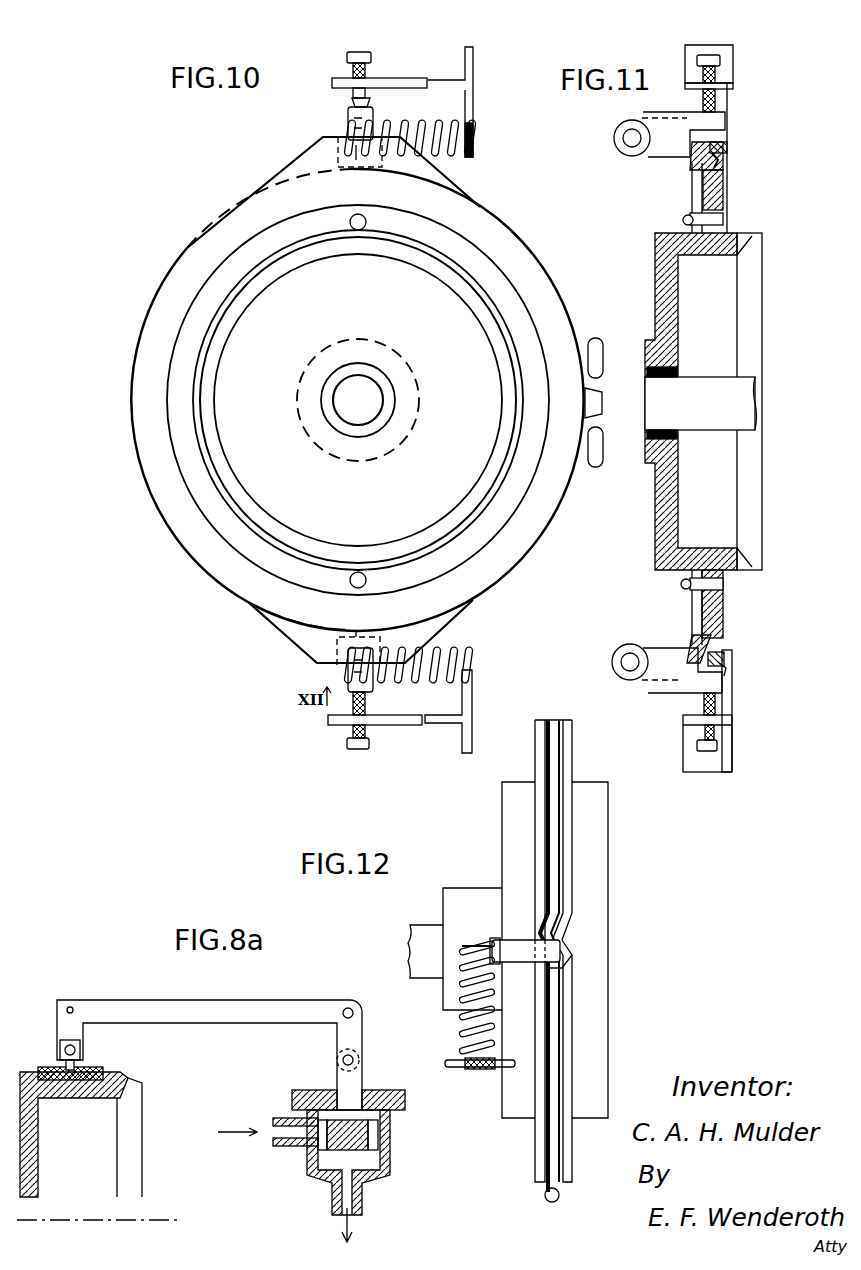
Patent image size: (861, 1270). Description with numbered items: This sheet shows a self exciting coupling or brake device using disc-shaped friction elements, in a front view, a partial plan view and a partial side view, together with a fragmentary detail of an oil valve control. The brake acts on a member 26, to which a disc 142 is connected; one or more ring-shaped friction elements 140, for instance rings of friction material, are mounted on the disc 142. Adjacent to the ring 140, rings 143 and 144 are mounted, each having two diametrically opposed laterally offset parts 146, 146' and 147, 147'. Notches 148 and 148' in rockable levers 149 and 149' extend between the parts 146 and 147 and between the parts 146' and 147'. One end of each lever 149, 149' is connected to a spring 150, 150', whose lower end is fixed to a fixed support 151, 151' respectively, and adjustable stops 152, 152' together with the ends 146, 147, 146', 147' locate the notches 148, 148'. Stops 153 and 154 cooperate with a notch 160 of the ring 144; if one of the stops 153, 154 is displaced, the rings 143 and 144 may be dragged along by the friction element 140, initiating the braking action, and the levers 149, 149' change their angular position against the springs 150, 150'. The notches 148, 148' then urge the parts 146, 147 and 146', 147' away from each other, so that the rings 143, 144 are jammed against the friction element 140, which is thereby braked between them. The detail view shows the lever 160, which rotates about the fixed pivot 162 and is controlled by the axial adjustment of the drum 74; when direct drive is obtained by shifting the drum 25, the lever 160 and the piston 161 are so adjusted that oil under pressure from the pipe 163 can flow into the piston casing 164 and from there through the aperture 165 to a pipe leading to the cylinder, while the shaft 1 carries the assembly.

In FIG. 10, the hub / shaft 1 is at (373, 392).
In FIG. 11, the hub / shaft 1 is at (647, 463).
In FIG. 12, the hub / shaft 1 is at (418, 970).
In FIG. 10, the drum 25 is at (453, 278).
In FIG. 11, the drum 25 is at (747, 250).
In FIG. 8A, the drum 25 is at (32, 1127).
In FIG. 10, the member 26 is at (297, 502).
In FIG. 11, the member 26 is at (660, 284).
In FIG. 12, the member 26 is at (597, 938).
In FIG. 8A, the drum 74 is at (44, 1066).
In FIG. 10, the ring-shaped friction element 140 is at (493, 525).
In FIG. 11, the ring-shaped friction element 140 is at (703, 192).
In FIG. 12, the ring-shaped friction element 140 is at (552, 760).
In FIG. 11, the disc 142 is at (692, 214).
In FIG. 12, the ring 143 is at (537, 828).
In FIG. 10, the ring 144 is at (225, 230).
In FIG. 12, the ring 144 is at (567, 830).
In FIG. 11, the laterally offset part 146 is at (738, 661).
In FIG. 12, the laterally offset part 146 is at (601, 961).
In FIG. 11, the laterally offset part 146' is at (741, 167).
In FIG. 11, the laterally offset part 147 is at (684, 644).
In FIG. 12, the laterally offset part 147 is at (511, 913).
In FIG. 11, the laterally offset part 147' is at (672, 164).
In FIG. 11, the notch 148 is at (743, 676).
In FIG. 11, the notch 148' is at (739, 143).
In FIG. 10, the rockable lever 149 is at (330, 661).
In FIG. 11, the rockable lever 149 is at (688, 711).
In FIG. 12, the rockable lever 149 is at (463, 936).
In FIG. 10, the rockable lever 149' is at (341, 137).
In FIG. 11, the rockable lever 149' is at (696, 81).
In FIG. 10, the spring 150 is at (431, 653).
In FIG. 11, the spring 150 is at (605, 667).
In FIG. 12, the spring 150 is at (450, 1000).
In FIG. 10, the spring 150' is at (433, 138).
In FIG. 11, the spring 150' is at (611, 138).
In FIG. 10, the fixed support 151 is at (400, 718).
In FIG. 11, the fixed support 151 is at (660, 658).
In FIG. 12, the fixed support 151 is at (472, 1083).
In FIG. 10, the fixed support 151' is at (402, 102).
In FIG. 11, the fixed support 151' is at (648, 149).
In FIG. 10, the adjustable stop 152 is at (338, 746).
In FIG. 11, the adjustable stop 152 is at (717, 770).
In FIG. 10, the adjustable stop 152' is at (332, 67).
In FIG. 11, the adjustable stop 152' is at (683, 67).
In FIG. 10, the stop 153 is at (593, 468).
In FIG. 12, the stop 153 is at (558, 1192).
In FIG. 10, the stop 154 is at (594, 336).
In FIG. 10, the lever 160 is at (614, 403).
In FIG. 12, the lever 160 is at (546, 1191).
In FIG. 8A, the lever 160 is at (242, 1005).
In FIG. 8A, the piston 161 is at (358, 1150).
In FIG. 8A, the fixed pivot 162 is at (73, 1006).
In FIG. 8A, the pipe 163 is at (270, 1124).
In FIG. 8A, the piston casing 164 is at (307, 1173).
In FIG. 8A, the aperture 165 is at (370, 1225).